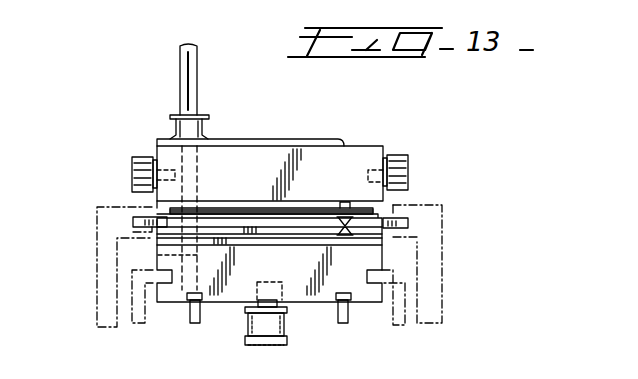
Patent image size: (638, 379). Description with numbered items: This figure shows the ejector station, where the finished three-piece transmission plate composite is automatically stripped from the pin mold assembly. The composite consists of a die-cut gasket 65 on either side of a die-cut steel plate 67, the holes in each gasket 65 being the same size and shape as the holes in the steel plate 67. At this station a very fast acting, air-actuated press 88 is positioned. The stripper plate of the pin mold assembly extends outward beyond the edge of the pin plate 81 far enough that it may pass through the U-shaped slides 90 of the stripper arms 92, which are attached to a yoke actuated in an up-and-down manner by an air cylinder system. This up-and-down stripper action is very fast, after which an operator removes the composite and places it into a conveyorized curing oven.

The gasket 65 is at (323, 211).
The steel plate 67 is at (376, 213).
The pin plate 81 is at (248, 240).
The press 88 is at (82, 240).
The U-shaped slide 90 is at (130, 212).
The stripper arm 92 is at (107, 280).